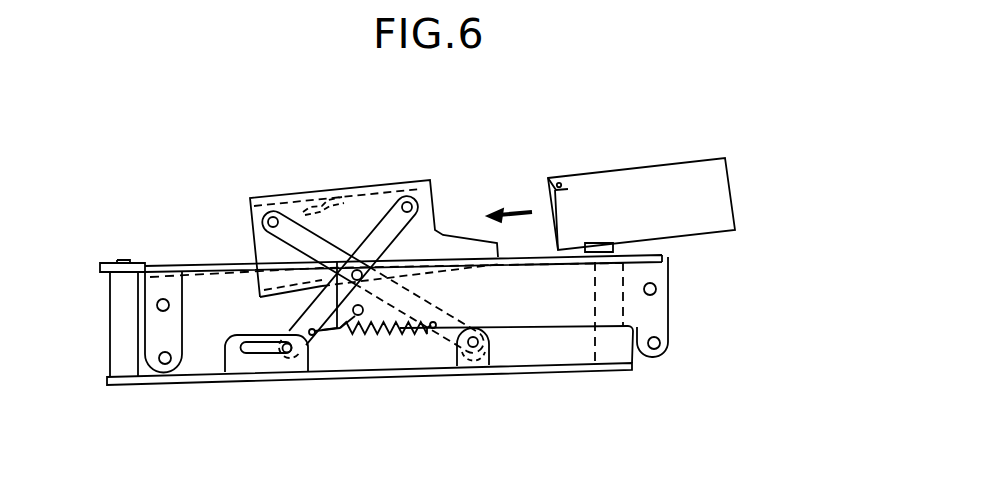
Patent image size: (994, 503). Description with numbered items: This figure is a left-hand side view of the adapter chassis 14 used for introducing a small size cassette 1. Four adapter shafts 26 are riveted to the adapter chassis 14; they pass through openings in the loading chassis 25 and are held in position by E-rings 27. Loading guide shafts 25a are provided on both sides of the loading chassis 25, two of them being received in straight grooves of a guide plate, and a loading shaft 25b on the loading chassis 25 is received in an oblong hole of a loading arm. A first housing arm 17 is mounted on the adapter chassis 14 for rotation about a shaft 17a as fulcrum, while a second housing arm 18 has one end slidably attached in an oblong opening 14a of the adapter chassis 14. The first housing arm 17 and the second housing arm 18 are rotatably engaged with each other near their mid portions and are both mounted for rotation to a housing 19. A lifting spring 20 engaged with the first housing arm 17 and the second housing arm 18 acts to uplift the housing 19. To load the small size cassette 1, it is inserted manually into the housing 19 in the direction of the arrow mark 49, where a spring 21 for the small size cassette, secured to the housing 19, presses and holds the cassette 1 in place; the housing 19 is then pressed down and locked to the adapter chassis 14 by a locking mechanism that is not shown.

The small size cassette 1 is at (667, 177).
The adapter chassis 14 is at (127, 387).
The oblong opening 14a is at (257, 353).
The first housing arm 17 is at (263, 237).
The shaft 17a is at (477, 353).
The second housing arm 18 is at (390, 220).
The housing 19 is at (437, 243).
The lifting spring 20 is at (392, 338).
The spring for the small size cassette 21 is at (323, 205).
The loading chassis 25 is at (538, 315).
The loading guide shafts 25a is at (159, 357).
The loading shaft 25b is at (358, 318).
The adapter shafts 26 is at (117, 310).
The E-rings 27 is at (112, 263).
The arrow mark 49 is at (528, 210).